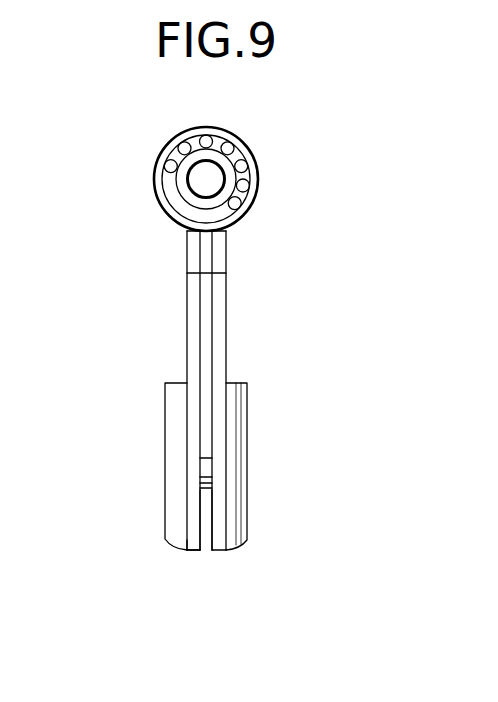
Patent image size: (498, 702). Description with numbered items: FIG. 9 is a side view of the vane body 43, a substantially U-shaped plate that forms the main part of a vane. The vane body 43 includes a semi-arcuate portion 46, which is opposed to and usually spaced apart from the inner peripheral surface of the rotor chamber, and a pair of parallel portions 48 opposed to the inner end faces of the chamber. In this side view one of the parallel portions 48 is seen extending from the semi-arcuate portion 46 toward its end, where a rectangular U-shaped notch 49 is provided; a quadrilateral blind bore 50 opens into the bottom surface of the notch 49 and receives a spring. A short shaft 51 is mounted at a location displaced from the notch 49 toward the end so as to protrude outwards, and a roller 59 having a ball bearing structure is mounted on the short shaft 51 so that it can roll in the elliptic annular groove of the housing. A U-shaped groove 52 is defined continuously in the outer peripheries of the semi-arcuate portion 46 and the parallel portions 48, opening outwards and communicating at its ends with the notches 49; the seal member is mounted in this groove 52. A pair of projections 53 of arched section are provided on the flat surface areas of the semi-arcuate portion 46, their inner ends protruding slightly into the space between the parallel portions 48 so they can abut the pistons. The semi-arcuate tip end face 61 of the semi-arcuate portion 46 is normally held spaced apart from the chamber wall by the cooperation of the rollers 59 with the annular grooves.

The vane body 43 is at (179, 345).
The semi-arcuate portion 46 is at (183, 488).
The parallel portions 48 is at (192, 297).
The rectangular U-shaped notch 49 is at (188, 273).
The quadrilateral blind bore 50 is at (208, 255).
The short shaft 51 is at (193, 178).
The U-shaped groove 52 is at (202, 551).
The projections 53 is at (165, 435).
The roller 59 is at (241, 150).
The semi-arcuate tip end face 61 is at (192, 553).